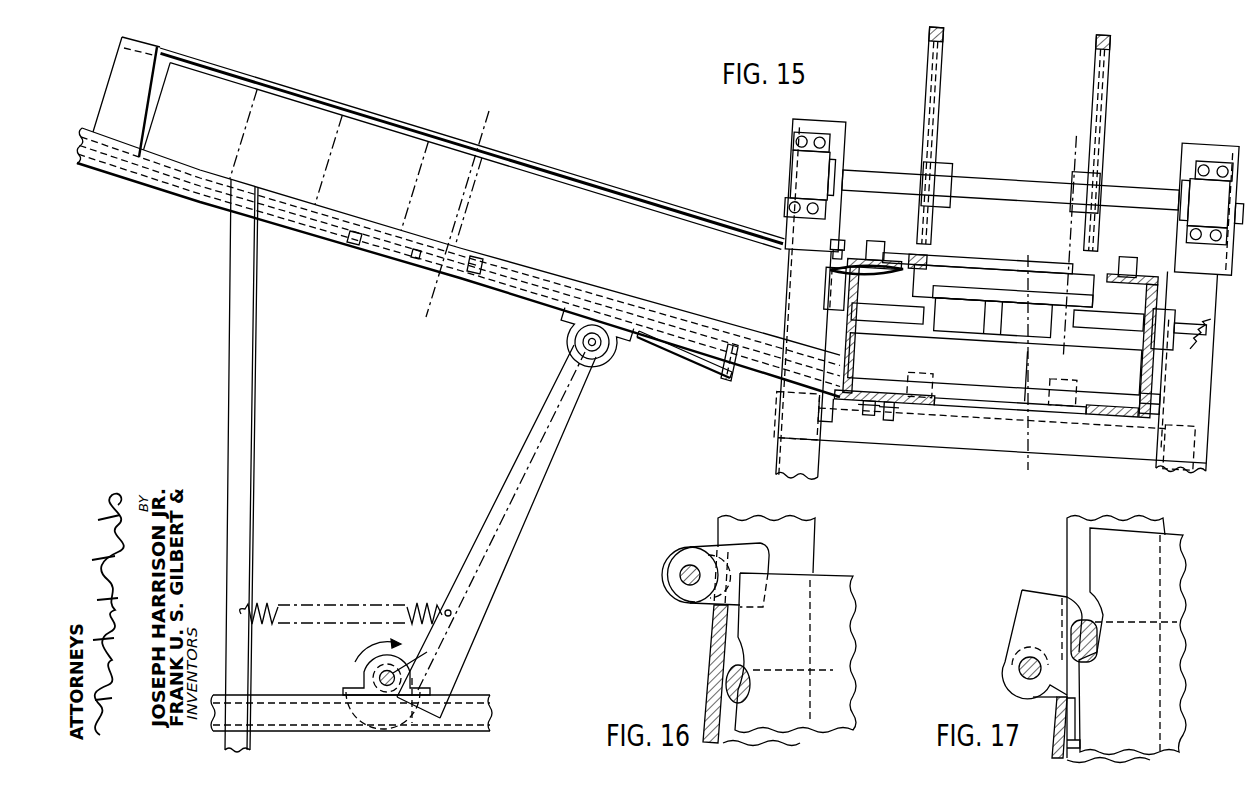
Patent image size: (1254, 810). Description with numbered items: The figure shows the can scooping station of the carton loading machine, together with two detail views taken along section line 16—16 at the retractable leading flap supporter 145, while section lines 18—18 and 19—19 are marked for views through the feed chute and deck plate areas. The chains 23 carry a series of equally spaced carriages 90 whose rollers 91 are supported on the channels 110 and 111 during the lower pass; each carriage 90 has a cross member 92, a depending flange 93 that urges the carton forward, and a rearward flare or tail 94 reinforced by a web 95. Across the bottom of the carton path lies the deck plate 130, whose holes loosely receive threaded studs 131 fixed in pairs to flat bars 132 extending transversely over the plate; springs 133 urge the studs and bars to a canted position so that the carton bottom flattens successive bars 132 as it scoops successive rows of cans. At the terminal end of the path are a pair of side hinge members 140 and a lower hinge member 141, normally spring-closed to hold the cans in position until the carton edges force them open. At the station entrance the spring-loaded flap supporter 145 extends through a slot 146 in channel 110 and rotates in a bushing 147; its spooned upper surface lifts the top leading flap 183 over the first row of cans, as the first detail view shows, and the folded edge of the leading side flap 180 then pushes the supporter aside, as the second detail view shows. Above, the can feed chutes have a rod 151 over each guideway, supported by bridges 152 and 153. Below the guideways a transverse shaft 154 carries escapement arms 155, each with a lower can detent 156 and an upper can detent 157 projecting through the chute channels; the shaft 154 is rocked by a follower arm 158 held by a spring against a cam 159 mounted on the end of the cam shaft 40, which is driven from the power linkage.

In FIG. 15, the section line 16— 16 is at (806, 262).
In FIG. 15, the section line 18— 18 is at (489, 111).
In FIG. 15, the section line 19— 19 is at (1063, 124).
In FIG. 15, the chains 23 is at (944, 36).
In FIG. 15, the cam shaft 40 is at (400, 670).
In FIG. 15, the carriage 90 is at (946, 238).
In FIG. 15, the rollers 91 is at (884, 237).
In FIG. 15, the cross member 92 is at (988, 255).
In FIG. 15, the depending flange 93 is at (1024, 264).
In FIG. 15, the flare or tail 94 is at (1037, 323).
In FIG. 15, the web 95 is at (965, 292).
In FIG. 15, the channel 110 is at (857, 339).
In FIG. 15, the channel 111 is at (1141, 355).
In FIG. 15, the deck plate 130 is at (984, 397).
In FIG. 15, the threaded studs 131 is at (900, 418).
In FIG. 15, the flat bars 132 is at (976, 399).
In FIG. 15, the springs 133 is at (884, 414).
In FIG. 15, the side hinge members 140 is at (897, 306).
In FIG. 15, the lower hinge member 141 is at (938, 348).
In FIG. 15, the retractable leading flap supporter 145 is at (838, 273).
In FIG. 16, the retractable leading flap supporter 145 is at (692, 604).
In FIG. 17, the retractable leading flap supporter 145 is at (1020, 633).
In FIG. 15, the slot 146 is at (903, 268).
In FIG. 15, the bushing 147 is at (838, 312).
In FIG. 15, the rod 151 is at (658, 185).
In FIG. 15, the bridge 152 is at (113, 128).
In FIG. 15, the bridge 153 is at (781, 284).
In FIG. 15, the shaft 154 is at (594, 350).
In FIG. 15, the escapement arms 155 is at (686, 362).
In FIG. 15, the can detent 156 is at (737, 378).
In FIG. 15, the can detent 157 is at (482, 290).
In FIG. 15, the follower arm 158 is at (505, 489).
In FIG. 15, the cam 159 is at (357, 683).
In FIG. 16, the leading side flap 180 is at (715, 690).
In FIG. 17, the leading side flap 180 is at (1073, 712).
In FIG. 16, the top leading flap 183 is at (830, 582).
In FIG. 17, the top leading flap 183 is at (1175, 539).